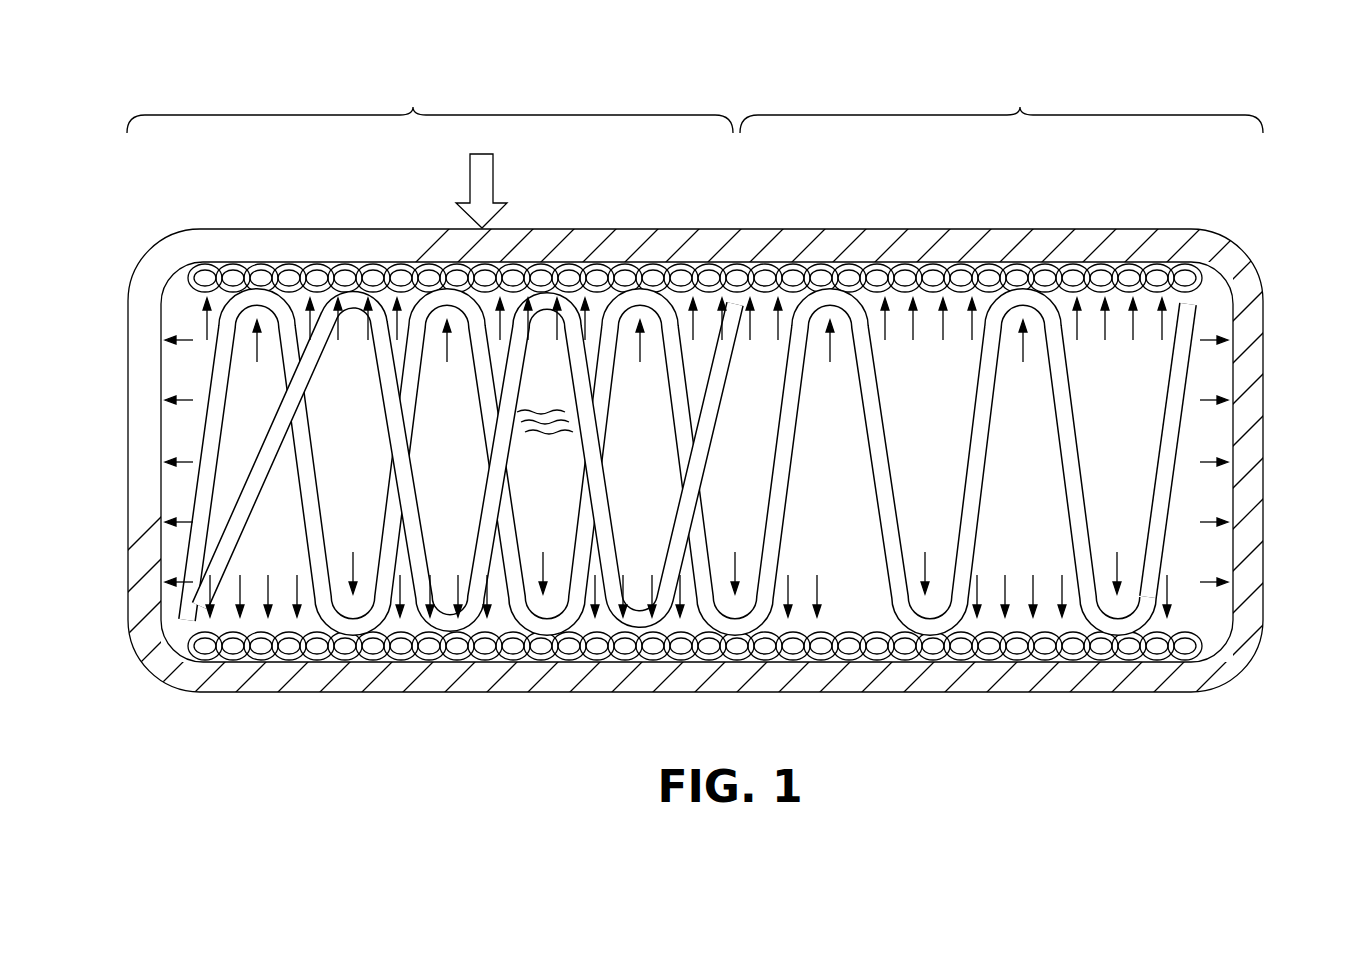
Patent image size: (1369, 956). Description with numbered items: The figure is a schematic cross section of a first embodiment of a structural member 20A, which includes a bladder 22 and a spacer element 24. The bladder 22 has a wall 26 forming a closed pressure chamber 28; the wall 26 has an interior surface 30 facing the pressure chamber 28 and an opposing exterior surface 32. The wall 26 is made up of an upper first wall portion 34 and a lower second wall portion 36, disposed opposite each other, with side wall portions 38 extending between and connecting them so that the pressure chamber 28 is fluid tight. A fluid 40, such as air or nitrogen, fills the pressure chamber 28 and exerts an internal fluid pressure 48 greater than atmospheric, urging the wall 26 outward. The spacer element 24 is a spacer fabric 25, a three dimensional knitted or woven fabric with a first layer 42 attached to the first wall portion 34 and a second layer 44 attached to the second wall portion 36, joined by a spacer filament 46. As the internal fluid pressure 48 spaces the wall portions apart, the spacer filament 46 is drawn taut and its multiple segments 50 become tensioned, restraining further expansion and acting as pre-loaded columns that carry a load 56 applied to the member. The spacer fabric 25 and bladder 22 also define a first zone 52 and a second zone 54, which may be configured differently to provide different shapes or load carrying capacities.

The structural member 20A is at (1107, 154).
The bladder 22 is at (700, 240).
The spacer element 24 is at (1100, 468).
The spacer fabric 25 is at (1165, 512).
The wall 26 is at (988, 248).
The pressure chamber 28 is at (1000, 545).
The interior surface 30 is at (160, 432).
The exterior surface 32 is at (128, 360).
The first wall portion 34 is at (575, 242).
The second wall portion 36 is at (608, 676).
The side wall portions 38 is at (1253, 425).
The fluid 40 is at (547, 437).
The first layer 42 is at (857, 277).
The second layer 44 is at (860, 652).
The spacer filament 46 is at (250, 472).
The internal fluid pressure 48 is at (825, 597).
The segments 50 is at (410, 385).
The first zone 52 is at (430, 105).
The second zone 54 is at (1001, 105).
The load 56 is at (495, 187).